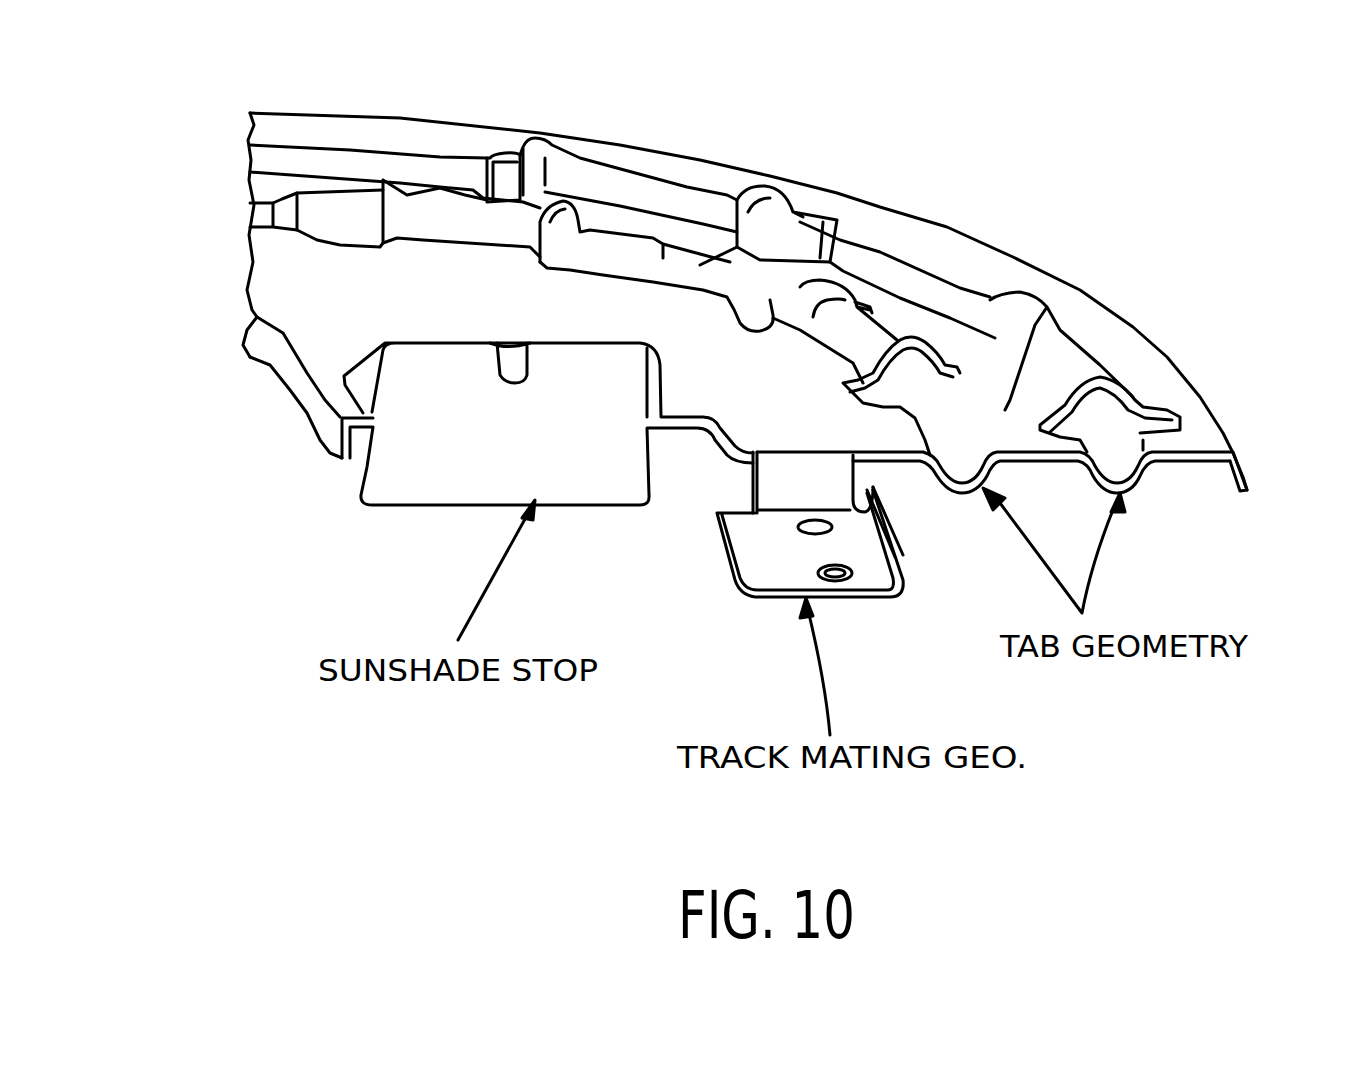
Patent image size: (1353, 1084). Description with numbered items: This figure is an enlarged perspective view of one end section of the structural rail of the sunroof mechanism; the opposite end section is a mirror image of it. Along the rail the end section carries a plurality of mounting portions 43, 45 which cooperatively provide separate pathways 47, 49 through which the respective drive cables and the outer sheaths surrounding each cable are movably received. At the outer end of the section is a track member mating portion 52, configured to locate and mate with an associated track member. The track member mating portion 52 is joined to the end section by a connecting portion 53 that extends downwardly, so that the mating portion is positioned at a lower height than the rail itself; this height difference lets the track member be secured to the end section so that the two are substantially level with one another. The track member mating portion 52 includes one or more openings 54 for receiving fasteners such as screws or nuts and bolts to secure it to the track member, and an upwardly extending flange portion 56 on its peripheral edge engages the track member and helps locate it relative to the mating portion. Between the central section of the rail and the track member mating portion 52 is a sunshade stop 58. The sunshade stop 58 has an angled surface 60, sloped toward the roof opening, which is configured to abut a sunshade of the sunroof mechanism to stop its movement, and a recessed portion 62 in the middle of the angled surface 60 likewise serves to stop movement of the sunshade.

The mounting portion 43 is at (703, 195).
The mounting portion 45 is at (913, 287).
The pathway 47 is at (1110, 433).
The pathway 49 is at (963, 467).
The track member mating portion 52 is at (813, 593).
The connecting portion 53 is at (750, 487).
The opening 54 is at (840, 565).
The flange portion 56 is at (910, 570).
The sunshade stop 58 is at (501, 470).
The angled surface 60 is at (517, 370).
The recessed portion 62 is at (285, 370).